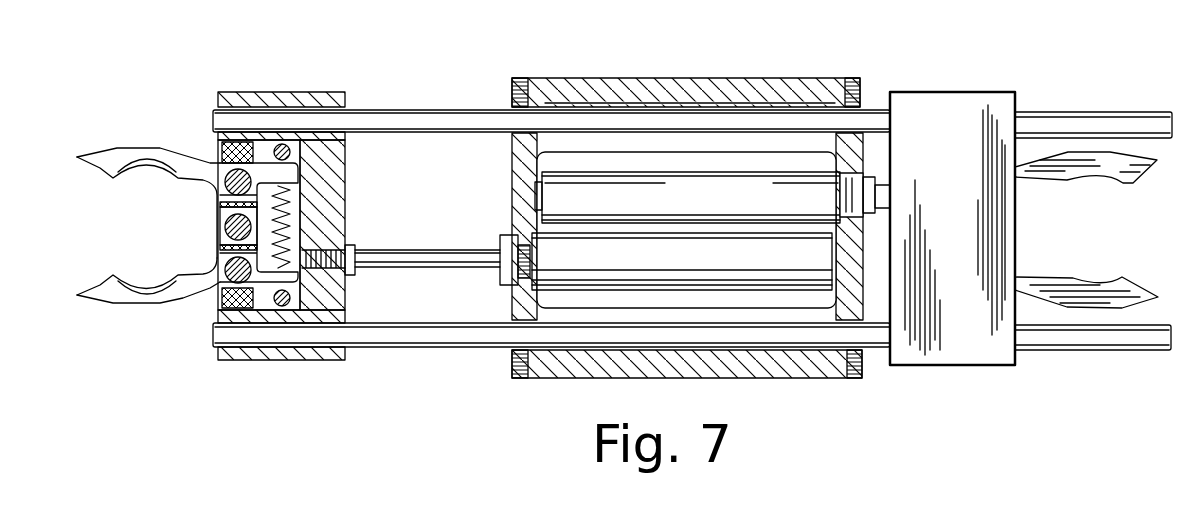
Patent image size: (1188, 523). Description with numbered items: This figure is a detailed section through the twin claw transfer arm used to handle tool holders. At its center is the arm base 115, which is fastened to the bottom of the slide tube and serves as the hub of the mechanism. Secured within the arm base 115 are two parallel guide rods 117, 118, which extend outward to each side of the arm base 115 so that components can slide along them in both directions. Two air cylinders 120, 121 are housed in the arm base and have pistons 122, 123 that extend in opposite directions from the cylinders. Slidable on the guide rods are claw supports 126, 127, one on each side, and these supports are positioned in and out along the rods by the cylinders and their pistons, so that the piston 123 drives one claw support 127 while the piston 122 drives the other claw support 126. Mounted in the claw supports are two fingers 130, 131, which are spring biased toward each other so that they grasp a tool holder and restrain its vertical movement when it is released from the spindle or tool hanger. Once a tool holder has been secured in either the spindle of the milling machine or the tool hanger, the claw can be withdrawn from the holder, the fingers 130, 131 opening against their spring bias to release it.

The arm base 115 is at (825, 378).
The guide rod 117 is at (400, 349).
The guide rod 118 is at (383, 110).
The air cylinder 120 is at (744, 209).
The air cylinder 121 is at (719, 274).
The piston 122 is at (877, 178).
The piston 123 is at (412, 250).
The claw support 126 is at (969, 185).
The claw support 127 is at (255, 92).
The finger 130 is at (130, 152).
The finger 131 is at (100, 270).